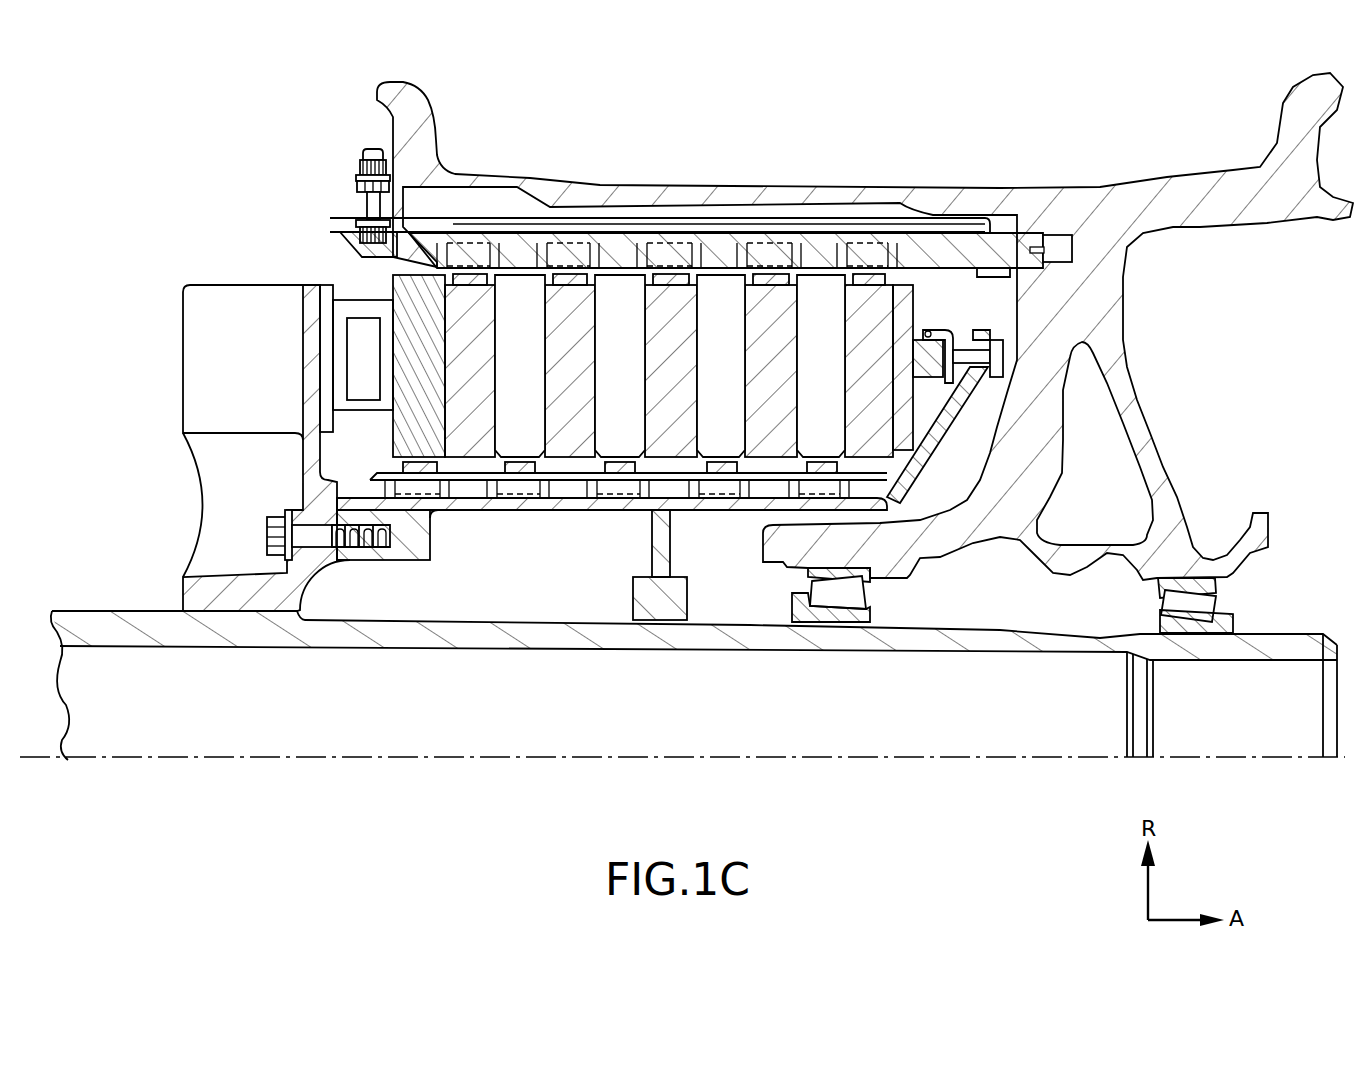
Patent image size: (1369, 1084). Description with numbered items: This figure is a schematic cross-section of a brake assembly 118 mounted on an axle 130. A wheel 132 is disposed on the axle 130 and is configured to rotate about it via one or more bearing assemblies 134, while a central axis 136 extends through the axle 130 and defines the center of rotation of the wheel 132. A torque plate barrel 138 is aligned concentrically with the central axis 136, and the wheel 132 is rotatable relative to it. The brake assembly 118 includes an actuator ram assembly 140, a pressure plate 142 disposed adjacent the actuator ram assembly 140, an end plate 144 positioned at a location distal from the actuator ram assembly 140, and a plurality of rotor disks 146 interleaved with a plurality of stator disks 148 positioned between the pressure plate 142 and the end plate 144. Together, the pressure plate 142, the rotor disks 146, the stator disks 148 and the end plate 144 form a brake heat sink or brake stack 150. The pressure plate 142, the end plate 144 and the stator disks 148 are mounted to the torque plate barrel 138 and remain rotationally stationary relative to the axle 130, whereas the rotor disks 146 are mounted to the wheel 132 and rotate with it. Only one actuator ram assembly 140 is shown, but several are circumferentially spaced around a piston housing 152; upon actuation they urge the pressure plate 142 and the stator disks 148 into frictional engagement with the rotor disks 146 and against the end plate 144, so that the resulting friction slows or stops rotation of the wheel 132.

The brake assembly 118 is at (178, 145).
The axle 130 is at (992, 645).
The wheel 132 is at (1087, 287).
The bearing assembly 134 is at (1190, 603).
The central axis 136 is at (945, 759).
The torque plate barrel 138 is at (500, 525).
The actuator ram assembly 140 is at (262, 254).
The pressure plate 142 is at (397, 288).
The end plate 144 is at (915, 298).
The rotor disks 146 is at (478, 295).
The stator disks 148 is at (620, 285).
The brake stack 150 is at (779, 280).
The piston housing 152 is at (192, 337).